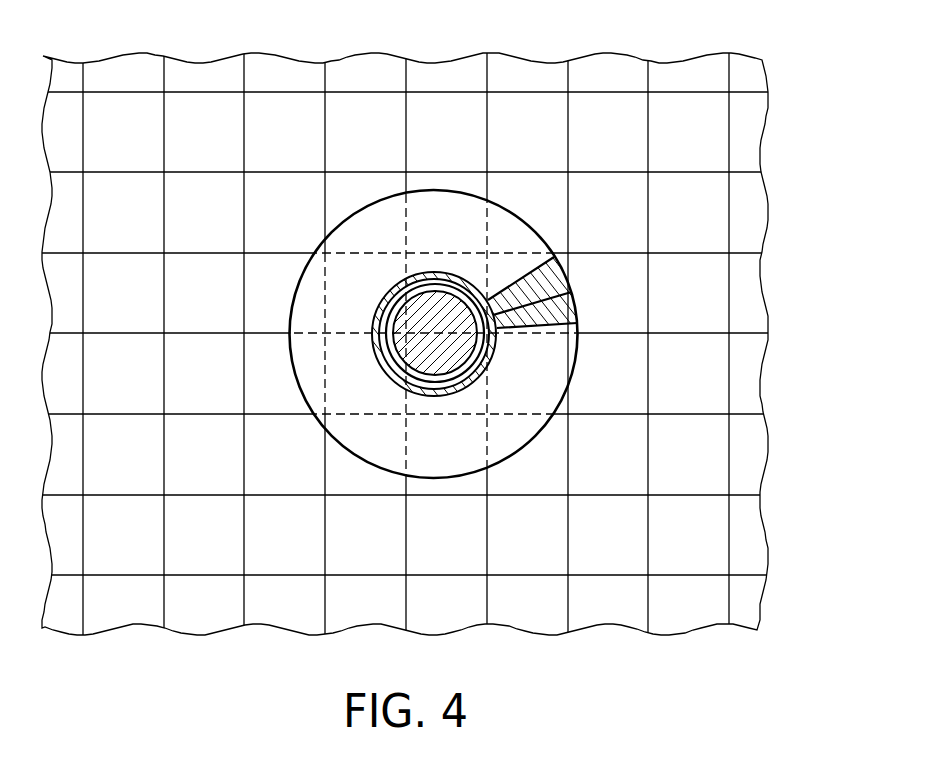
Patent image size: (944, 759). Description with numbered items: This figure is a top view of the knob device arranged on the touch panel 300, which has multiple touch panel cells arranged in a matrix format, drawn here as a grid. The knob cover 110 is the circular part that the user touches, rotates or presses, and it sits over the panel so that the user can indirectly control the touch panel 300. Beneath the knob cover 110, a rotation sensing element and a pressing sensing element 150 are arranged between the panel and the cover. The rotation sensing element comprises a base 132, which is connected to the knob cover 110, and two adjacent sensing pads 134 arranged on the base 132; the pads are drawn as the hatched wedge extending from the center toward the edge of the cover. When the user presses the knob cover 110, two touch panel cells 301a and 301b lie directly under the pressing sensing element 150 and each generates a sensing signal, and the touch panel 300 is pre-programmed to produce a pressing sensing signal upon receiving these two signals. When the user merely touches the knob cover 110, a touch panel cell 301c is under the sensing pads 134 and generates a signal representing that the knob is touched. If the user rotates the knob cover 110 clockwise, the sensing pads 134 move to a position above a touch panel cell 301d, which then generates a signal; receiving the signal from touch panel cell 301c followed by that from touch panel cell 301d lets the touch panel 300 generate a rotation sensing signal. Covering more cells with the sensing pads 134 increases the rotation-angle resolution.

The touch panel 300 is at (700, 53).
The knob cover 110 is at (437, 189).
The base 132 is at (433, 270).
The pressing sensing element 150 is at (395, 325).
The sensing pads 134 is at (543, 285).
The touch panel cell 301a is at (470, 268).
The touch panel cell 301b is at (470, 400).
The touch panel cell 301c is at (512, 269).
The touch panel cell 301d is at (535, 382).